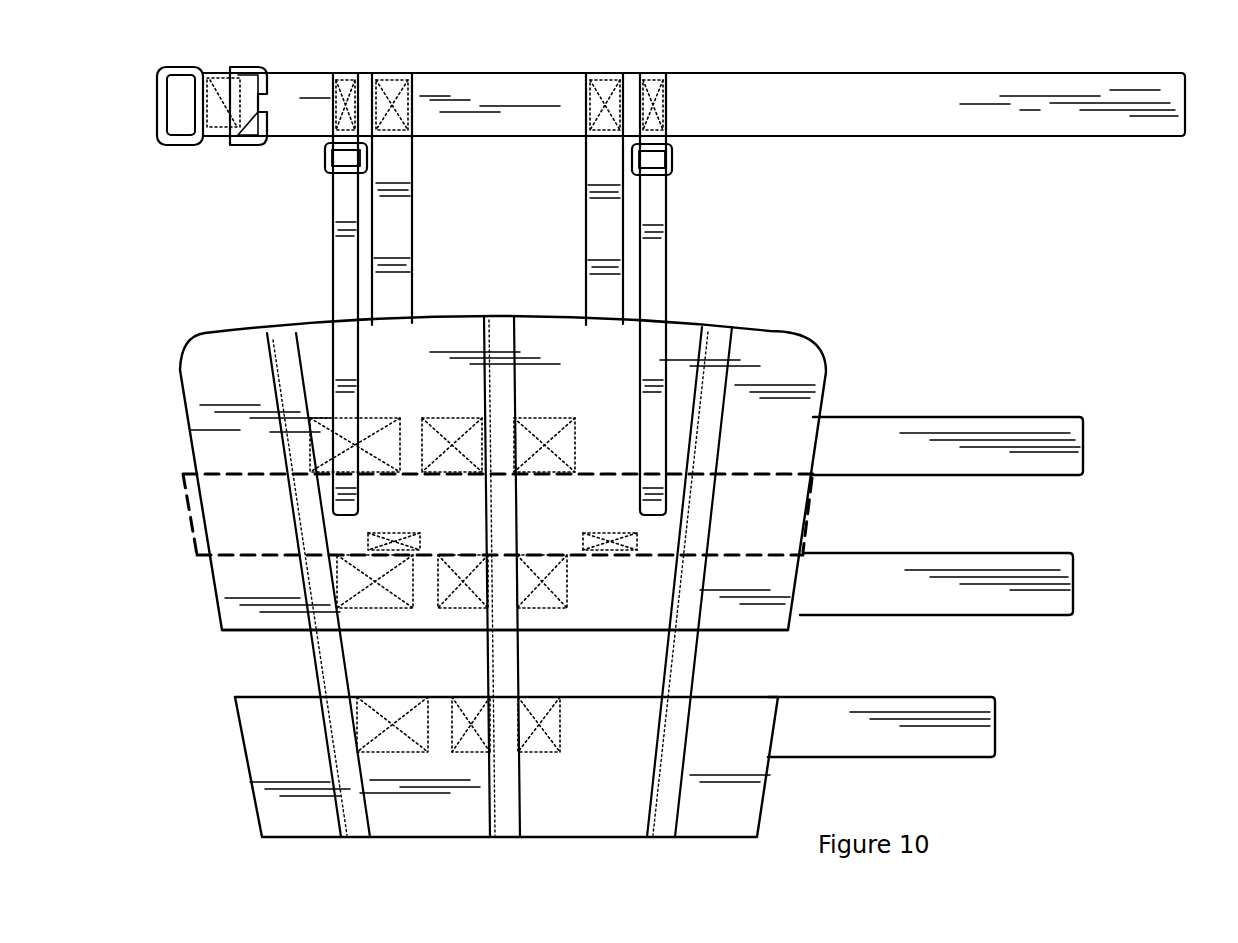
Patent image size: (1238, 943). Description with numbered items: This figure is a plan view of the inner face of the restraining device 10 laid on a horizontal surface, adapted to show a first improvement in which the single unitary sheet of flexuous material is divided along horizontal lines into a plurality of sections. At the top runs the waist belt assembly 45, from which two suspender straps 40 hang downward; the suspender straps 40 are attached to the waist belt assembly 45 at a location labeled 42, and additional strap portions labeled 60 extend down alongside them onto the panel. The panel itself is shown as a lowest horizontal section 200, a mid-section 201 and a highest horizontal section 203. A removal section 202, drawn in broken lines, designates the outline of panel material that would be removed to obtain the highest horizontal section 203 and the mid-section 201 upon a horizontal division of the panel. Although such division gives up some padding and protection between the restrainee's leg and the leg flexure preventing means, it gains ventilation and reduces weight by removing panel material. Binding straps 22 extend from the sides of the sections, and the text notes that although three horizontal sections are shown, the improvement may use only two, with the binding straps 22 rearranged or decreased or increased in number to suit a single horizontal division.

The restraining device 10 is at (617, 431).
The binding straps 22 is at (925, 587).
The suspender straps 40 is at (391, 228).
The strap attachment stitching 42 is at (410, 73).
The waist belt assembly 45 is at (706, 74).
The adjustment straps 60 is at (346, 257).
The lowest horizontal section 200 is at (248, 785).
The mid-section 201 is at (230, 600).
The removal section 202 is at (208, 487).
The highest horizontal section 203 is at (190, 364).